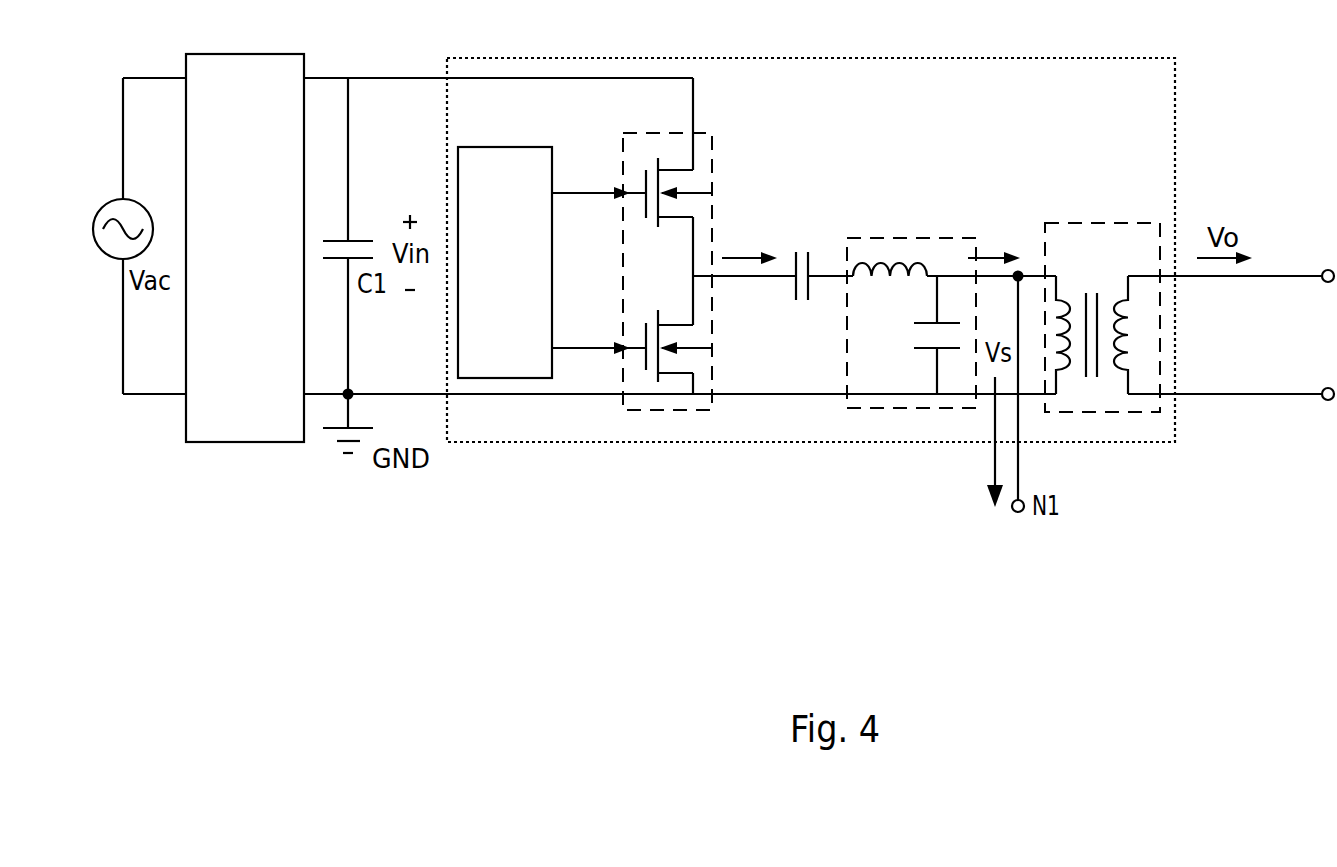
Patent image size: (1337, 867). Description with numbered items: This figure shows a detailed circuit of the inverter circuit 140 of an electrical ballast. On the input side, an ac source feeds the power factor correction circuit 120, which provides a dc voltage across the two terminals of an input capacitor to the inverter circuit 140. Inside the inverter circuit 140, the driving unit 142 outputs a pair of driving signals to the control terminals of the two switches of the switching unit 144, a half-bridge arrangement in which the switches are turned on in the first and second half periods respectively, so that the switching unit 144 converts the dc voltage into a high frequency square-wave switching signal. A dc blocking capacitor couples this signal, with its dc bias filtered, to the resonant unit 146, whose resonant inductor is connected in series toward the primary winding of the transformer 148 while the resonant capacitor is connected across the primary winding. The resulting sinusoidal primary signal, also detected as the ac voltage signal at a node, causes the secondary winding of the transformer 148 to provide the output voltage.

The power factor correction circuit 120 is at (264, 328).
The inverter circuit 140 is at (683, 58).
The driving unit 142 is at (522, 316).
The switching unit 144 is at (713, 163).
The resonant unit 146 is at (923, 238).
The transformer 148 is at (1077, 222).